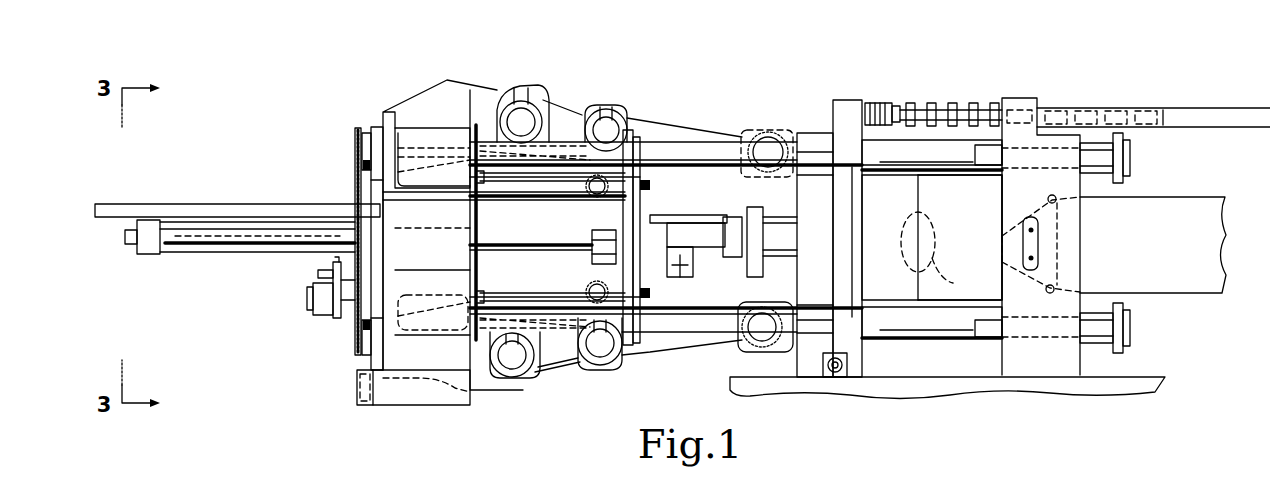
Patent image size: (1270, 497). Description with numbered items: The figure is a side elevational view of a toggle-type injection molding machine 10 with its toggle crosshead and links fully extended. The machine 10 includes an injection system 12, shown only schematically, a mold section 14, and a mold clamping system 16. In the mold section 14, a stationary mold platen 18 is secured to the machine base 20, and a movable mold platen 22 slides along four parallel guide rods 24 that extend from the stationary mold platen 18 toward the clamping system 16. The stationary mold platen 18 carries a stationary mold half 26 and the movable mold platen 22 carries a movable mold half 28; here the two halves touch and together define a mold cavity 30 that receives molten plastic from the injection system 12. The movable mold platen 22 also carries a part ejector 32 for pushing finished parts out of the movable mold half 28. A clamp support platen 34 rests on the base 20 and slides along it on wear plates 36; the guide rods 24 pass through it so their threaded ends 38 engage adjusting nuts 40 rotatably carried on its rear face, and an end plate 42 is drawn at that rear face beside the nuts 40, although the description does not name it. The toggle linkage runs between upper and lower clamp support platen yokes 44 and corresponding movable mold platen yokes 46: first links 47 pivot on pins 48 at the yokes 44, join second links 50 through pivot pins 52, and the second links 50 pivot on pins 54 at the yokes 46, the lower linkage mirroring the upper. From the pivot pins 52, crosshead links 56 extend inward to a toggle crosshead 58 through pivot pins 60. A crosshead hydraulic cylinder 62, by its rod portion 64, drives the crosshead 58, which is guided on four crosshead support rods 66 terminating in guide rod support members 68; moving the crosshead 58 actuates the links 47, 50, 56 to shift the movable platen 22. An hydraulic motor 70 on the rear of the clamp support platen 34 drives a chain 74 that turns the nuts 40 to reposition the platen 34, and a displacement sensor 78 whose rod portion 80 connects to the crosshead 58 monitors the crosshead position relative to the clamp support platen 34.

The injection molding machine 10 is at (292, 68).
The injection system 12 is at (1146, 206).
The mold section 14 is at (959, 79).
The mold clamping system 16 is at (656, 84).
The stationary mold platen 18 is at (1020, 199).
The machine base 20 is at (410, 405).
The movable mold platen 22 is at (811, 135).
The guide rods 24 is at (930, 146).
The stationary mold half 26 is at (955, 210).
The movable mold half 28 is at (872, 210).
The mold cavity 30 is at (942, 251).
The part ejector 32 is at (718, 279).
The clamp support platen 34 is at (414, 138).
The wear plates 36 is at (357, 378).
The threaded ends 38 is at (478, 128).
The nuts 40 is at (362, 133).
The end plate 42 is at (375, 127).
The clamp support platen yokes 44 is at (447, 96).
The movable mold platen yokes 46 is at (783, 132).
The first links 47 is at (563, 114).
The pivot pins 48 is at (518, 116).
The second links 50 is at (690, 136).
The pivot pins 52 is at (610, 118).
The pivot pins 54 is at (765, 148).
The crosshead links 56 is at (614, 172).
The toggle crosshead 58 is at (592, 262).
The pivot pins 60 is at (650, 185).
The crosshead hydraulic cylinder 62 is at (235, 250).
The rod portion 64 is at (516, 249).
The crosshead support rods 66 is at (533, 183).
The guide rod support members 68 is at (640, 220).
The hydraulic motor 70 is at (307, 312).
The chain 74 is at (356, 196).
The displacement sensor 78 is at (193, 206).
The rod portion 80 is at (510, 218).